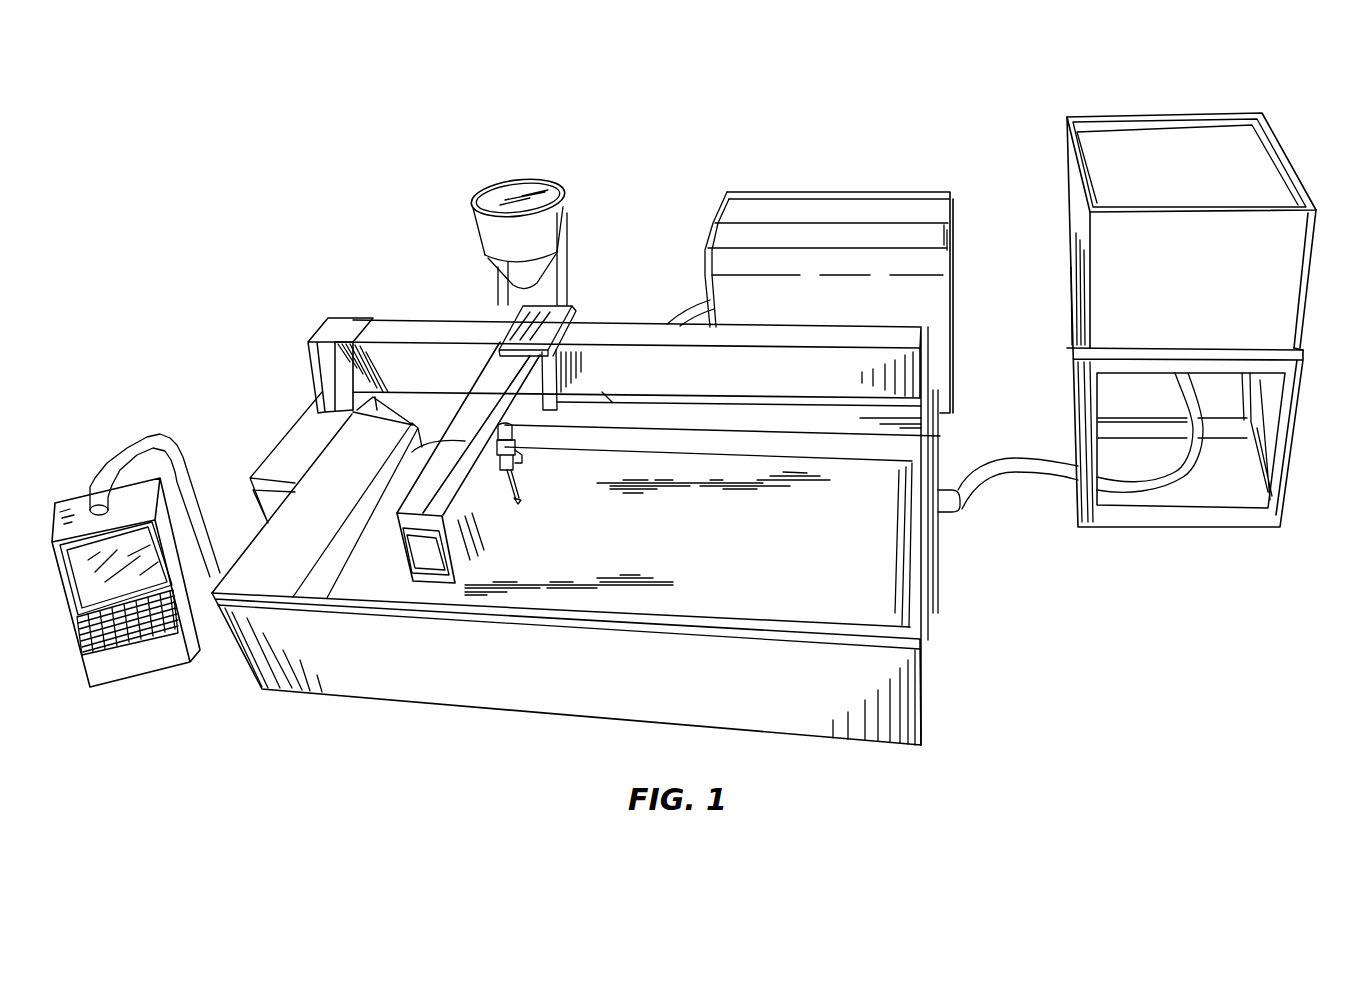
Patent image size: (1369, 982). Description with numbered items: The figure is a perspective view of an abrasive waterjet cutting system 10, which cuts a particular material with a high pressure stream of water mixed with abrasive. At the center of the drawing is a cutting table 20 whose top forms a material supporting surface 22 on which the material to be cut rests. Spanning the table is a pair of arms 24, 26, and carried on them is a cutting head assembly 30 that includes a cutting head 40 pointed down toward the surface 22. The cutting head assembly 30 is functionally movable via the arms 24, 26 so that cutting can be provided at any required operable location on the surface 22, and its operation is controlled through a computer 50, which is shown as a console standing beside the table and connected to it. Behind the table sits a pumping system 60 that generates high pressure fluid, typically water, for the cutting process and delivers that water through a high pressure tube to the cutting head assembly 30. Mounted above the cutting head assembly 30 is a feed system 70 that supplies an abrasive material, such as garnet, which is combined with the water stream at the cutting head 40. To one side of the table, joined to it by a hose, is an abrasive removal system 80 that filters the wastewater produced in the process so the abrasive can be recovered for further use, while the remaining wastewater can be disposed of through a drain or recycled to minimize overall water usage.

The abrasive waterjet cutting system 10 is at (781, 82).
The cutting table 20 is at (818, 735).
The material supporting surface 22 is at (863, 589).
The arm 24 is at (488, 405).
The arm 26 is at (630, 323).
The cutting head assembly 30 is at (491, 411).
The cutting head 40 is at (462, 540).
The computer 50 is at (143, 658).
The pumping system 60 is at (826, 213).
The feed system 70 is at (508, 192).
The abrasive removal system 80 is at (1280, 297).